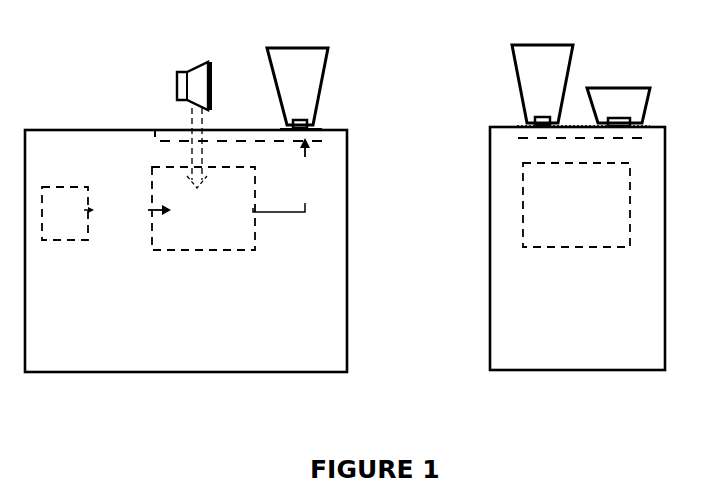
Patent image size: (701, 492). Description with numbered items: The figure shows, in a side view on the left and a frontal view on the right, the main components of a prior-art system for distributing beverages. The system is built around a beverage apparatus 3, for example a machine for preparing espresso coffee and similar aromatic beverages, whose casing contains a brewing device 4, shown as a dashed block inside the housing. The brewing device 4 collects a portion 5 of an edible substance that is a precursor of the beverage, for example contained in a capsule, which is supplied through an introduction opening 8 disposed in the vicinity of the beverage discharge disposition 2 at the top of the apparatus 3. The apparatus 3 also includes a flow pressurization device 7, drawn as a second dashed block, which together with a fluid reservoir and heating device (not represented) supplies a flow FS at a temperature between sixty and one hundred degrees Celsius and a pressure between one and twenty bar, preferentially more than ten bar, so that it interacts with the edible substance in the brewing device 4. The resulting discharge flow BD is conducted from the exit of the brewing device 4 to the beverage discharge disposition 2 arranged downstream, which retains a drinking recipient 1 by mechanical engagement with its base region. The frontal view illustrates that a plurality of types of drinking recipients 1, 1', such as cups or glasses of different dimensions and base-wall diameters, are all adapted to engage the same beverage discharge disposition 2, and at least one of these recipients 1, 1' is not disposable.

The drinking recipient 1 is at (420, 72).
The drinking recipient 1' is at (618, 92).
The beverage discharge disposition 2 is at (322, 126).
The beverage apparatus 3 is at (345, 227).
The brewing device 4 is at (391, 207).
The portion of edible substance 5 is at (194, 108).
The flow pressurization device 7 is at (70, 199).
The introduction opening 8 is at (402, 120).
The flow FS is at (127, 211).
The discharge flow BD is at (290, 175).